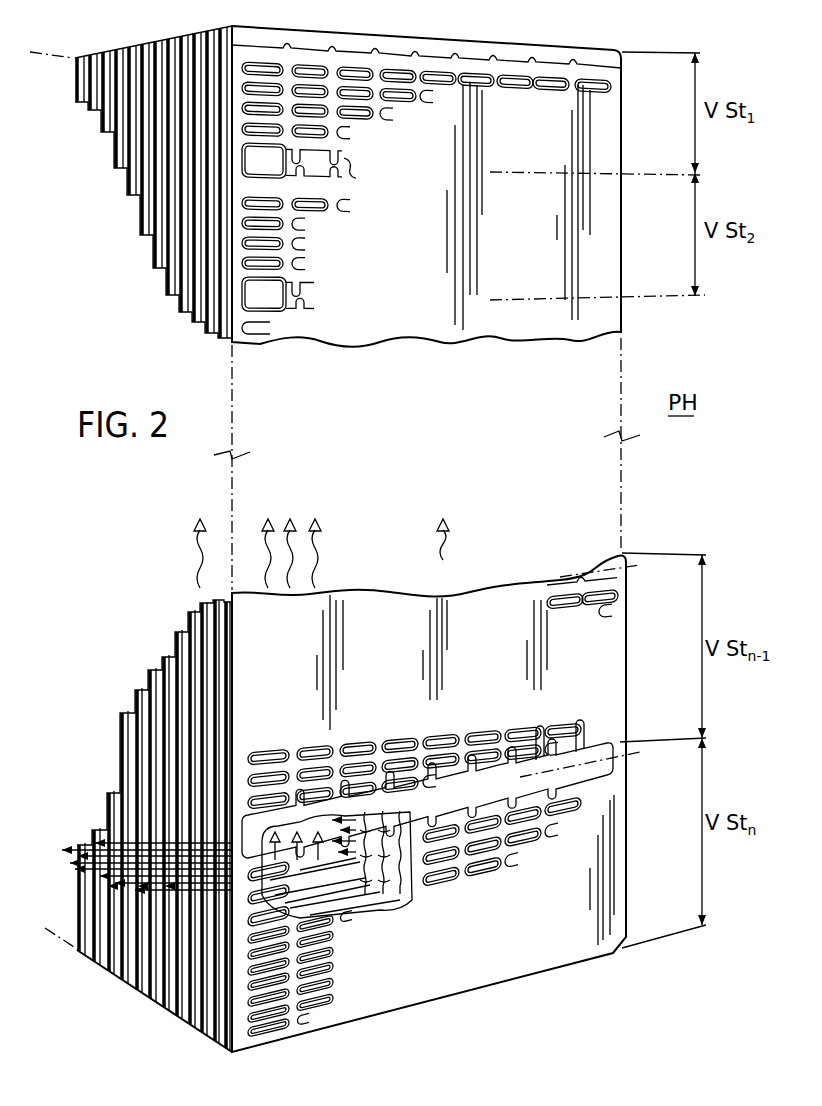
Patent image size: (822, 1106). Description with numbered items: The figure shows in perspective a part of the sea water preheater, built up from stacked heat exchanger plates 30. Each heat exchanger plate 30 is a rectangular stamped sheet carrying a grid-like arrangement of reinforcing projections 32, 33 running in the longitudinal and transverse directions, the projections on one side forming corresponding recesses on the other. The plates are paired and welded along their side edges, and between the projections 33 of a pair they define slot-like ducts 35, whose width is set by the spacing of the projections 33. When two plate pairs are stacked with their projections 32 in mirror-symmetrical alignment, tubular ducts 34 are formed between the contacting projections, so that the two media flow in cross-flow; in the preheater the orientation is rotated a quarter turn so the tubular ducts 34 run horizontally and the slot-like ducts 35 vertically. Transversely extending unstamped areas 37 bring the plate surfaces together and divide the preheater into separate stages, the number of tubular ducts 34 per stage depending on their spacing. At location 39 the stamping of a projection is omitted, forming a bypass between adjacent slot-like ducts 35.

The heat exchanger plate 30 is at (405, 310).
The reinforcing projections 32 is at (250, 998).
The reinforcing projections 33 is at (540, 734).
The tubular ducts 34 is at (400, 862).
The slot-like ducts 35 is at (365, 925).
The unstamped areas 37 is at (346, 162).
The location without stamped projection 39 is at (545, 733).